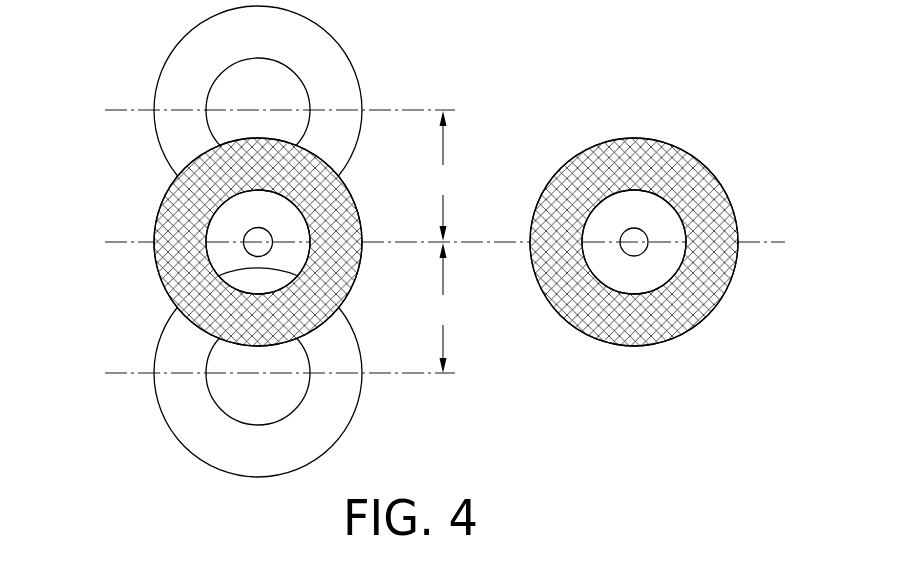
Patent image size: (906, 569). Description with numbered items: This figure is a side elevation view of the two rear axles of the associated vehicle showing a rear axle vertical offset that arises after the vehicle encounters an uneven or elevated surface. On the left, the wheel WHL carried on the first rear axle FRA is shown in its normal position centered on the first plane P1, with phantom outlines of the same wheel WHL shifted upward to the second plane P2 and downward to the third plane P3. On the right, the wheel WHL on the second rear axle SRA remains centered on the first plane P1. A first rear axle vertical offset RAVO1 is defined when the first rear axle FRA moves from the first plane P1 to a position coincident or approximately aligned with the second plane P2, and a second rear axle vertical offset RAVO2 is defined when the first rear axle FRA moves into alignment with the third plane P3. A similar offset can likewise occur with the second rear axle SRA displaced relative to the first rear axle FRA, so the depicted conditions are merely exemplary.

The first plane P1 is at (123, 242).
The second plane P2 is at (123, 110).
The third plane P3 is at (123, 373).
The first rear axle FRA is at (272, 232).
The second rear axle SRA is at (620, 230).
The wheel WHL is at (162, 273).
The first rear axle vertical offset RAVO1 is at (451, 176).
The second rear axle vertical offset RAVO2 is at (451, 308).